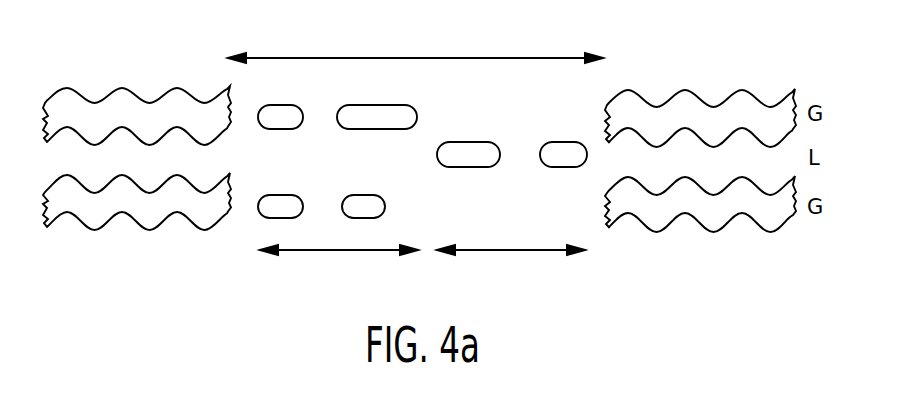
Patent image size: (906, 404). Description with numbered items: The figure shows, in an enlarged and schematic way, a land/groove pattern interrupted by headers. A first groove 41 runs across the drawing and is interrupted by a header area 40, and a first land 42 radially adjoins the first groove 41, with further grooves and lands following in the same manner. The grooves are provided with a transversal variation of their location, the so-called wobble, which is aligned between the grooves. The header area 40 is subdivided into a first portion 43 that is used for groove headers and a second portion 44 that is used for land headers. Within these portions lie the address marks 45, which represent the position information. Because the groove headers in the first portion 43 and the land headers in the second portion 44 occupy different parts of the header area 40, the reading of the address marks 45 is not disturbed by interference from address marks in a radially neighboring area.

The header area 40 is at (418, 57).
The first groove 41 is at (63, 92).
The first land 42 is at (65, 162).
The first portion 43 is at (341, 252).
The second portion 44 is at (514, 252).
The address marks 45 is at (466, 145).